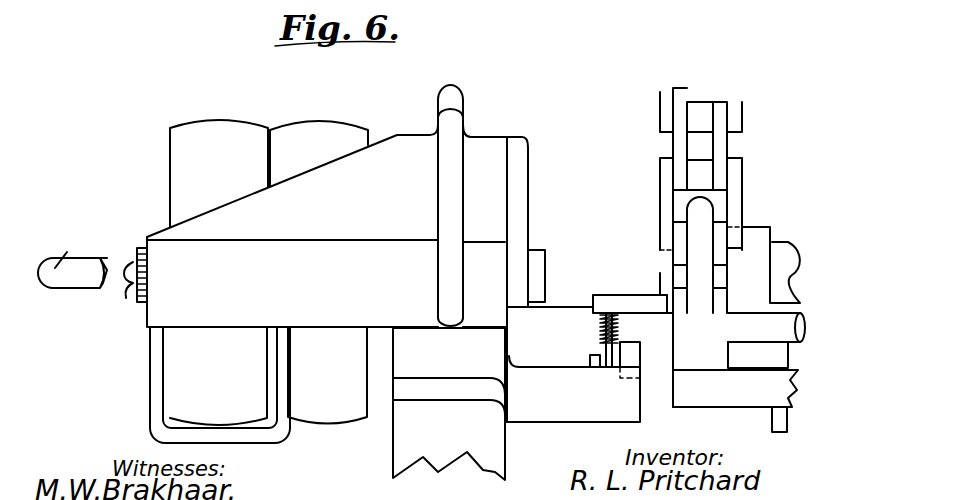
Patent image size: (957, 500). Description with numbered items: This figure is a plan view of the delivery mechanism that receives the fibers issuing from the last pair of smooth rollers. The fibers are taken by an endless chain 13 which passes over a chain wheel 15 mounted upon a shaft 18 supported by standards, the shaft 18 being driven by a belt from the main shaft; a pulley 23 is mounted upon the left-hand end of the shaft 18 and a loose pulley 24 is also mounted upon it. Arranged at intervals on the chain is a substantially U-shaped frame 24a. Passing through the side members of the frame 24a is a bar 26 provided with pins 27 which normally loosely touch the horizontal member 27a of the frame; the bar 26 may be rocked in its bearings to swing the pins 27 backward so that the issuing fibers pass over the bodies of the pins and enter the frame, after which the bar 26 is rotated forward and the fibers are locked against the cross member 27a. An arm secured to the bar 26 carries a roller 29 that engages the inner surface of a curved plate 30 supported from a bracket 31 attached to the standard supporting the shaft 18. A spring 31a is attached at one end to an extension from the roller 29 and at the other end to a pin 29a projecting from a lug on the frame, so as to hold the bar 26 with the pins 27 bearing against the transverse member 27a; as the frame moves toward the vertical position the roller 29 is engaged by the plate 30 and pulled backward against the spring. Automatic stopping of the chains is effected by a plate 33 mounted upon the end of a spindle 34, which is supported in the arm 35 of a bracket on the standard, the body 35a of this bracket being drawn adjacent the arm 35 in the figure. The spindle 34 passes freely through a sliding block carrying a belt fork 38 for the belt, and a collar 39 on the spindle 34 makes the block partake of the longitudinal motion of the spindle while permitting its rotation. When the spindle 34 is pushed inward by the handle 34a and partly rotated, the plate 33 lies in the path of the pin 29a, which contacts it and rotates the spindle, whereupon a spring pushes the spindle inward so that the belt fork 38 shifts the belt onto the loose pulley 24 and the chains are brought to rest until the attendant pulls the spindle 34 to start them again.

The endless chain 13 is at (680, 112).
The chain wheel 15 is at (701, 247).
The shaft 18 is at (562, 279).
The pulley 23 is at (219, 272).
The loose pulley 24 is at (319, 272).
The U-shaped frame 24a is at (740, 282).
The bar 26 is at (766, 327).
The pin 27 is at (779, 355).
The horizontal member of the frame 27a is at (735, 401).
The roller 29 is at (628, 360).
The pin 29a is at (662, 294).
The curved plate 30 is at (573, 389).
The bracket 31 is at (450, 404).
The spring 31a is at (585, 340).
The plate 33 is at (547, 270).
The spindle 34 is at (92, 267).
The handle 34a is at (74, 244).
The arm 35 is at (523, 203).
The body 35a is at (337, 273).
The belt fork 38 is at (157, 383).
The collar 39 is at (125, 297).